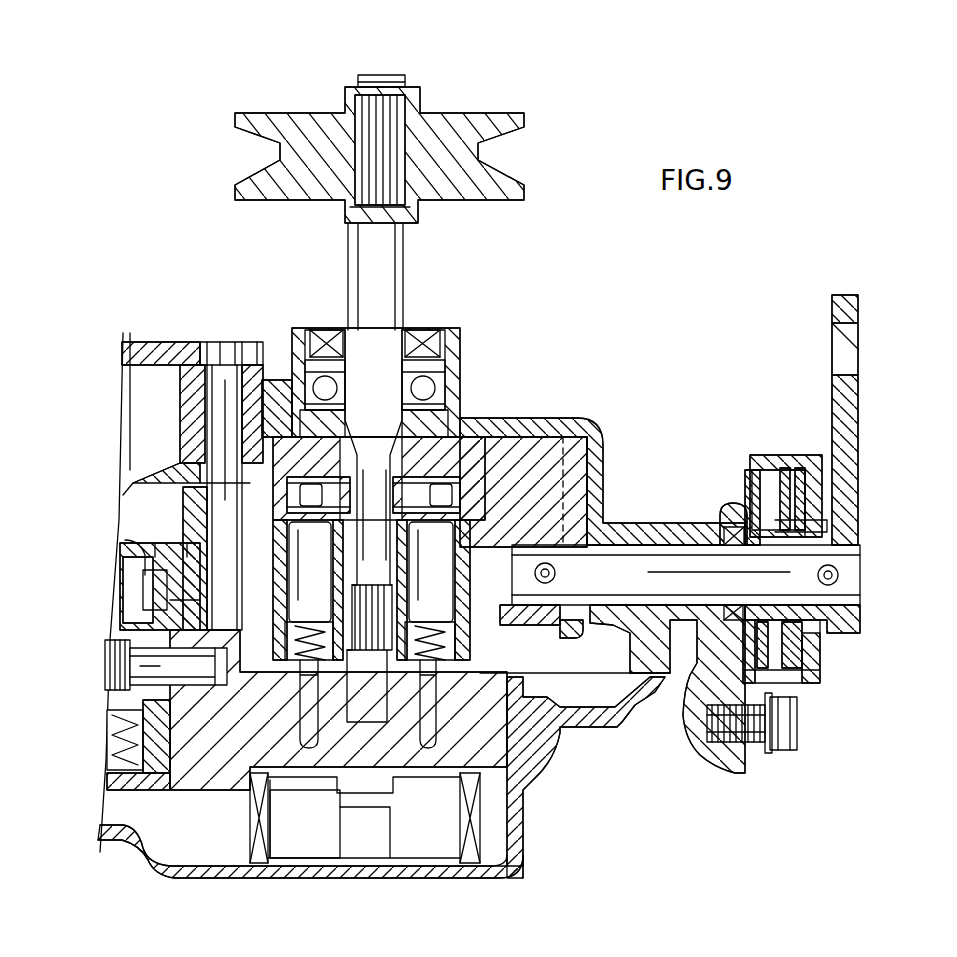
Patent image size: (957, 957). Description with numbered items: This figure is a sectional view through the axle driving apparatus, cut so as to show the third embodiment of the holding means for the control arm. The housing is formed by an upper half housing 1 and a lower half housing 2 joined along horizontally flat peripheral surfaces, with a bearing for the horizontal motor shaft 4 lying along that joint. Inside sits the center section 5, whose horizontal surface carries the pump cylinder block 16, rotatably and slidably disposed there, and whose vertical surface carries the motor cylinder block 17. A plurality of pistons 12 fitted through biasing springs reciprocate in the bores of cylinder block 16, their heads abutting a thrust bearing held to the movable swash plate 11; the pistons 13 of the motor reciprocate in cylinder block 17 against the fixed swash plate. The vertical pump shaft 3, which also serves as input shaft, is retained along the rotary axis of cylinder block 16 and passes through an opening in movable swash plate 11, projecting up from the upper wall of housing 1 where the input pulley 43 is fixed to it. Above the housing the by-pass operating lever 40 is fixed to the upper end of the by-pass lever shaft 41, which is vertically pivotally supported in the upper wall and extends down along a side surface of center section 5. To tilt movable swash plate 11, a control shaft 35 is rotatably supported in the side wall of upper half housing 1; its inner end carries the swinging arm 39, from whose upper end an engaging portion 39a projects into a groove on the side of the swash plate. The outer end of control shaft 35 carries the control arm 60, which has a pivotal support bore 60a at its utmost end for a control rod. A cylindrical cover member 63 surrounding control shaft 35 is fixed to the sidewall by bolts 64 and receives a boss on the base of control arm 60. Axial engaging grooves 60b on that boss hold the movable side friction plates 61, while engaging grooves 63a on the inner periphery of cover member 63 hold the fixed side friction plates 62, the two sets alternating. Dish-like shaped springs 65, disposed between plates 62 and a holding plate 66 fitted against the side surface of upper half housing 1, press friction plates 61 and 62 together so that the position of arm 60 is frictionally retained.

The upper half housing 1 is at (148, 480).
The lower half housing 2 is at (123, 855).
The pump shaft 3 is at (403, 246).
The motor shaft 4 is at (126, 668).
The center section 5 is at (512, 765).
The movable swash plate 11 is at (282, 518).
The pistons 12 is at (310, 602).
The pistons 13 is at (128, 590).
The cylinder block 16 is at (473, 618).
The cylinder block 17 is at (140, 540).
The control shaft 35 is at (855, 570).
The swinging arm 39 is at (548, 463).
The engaging portion 39a is at (485, 432).
The by-pass operating lever 40 is at (160, 342).
The by-pass lever shaft 41 is at (226, 375).
The input pulley 43 is at (510, 118).
The control arm 60 is at (858, 422).
The pivotal support bore 60a is at (855, 335).
The engaging grooves 60b is at (848, 612).
The movable side friction plates 61 is at (815, 645).
The fixed side friction plates 62 is at (793, 465).
The cover member 63 is at (818, 455).
The engaging grooves 63a is at (750, 480).
The bolts 64 is at (798, 728).
The dish-like shaped springs 65 is at (748, 478).
The holding plate 66 is at (745, 492).